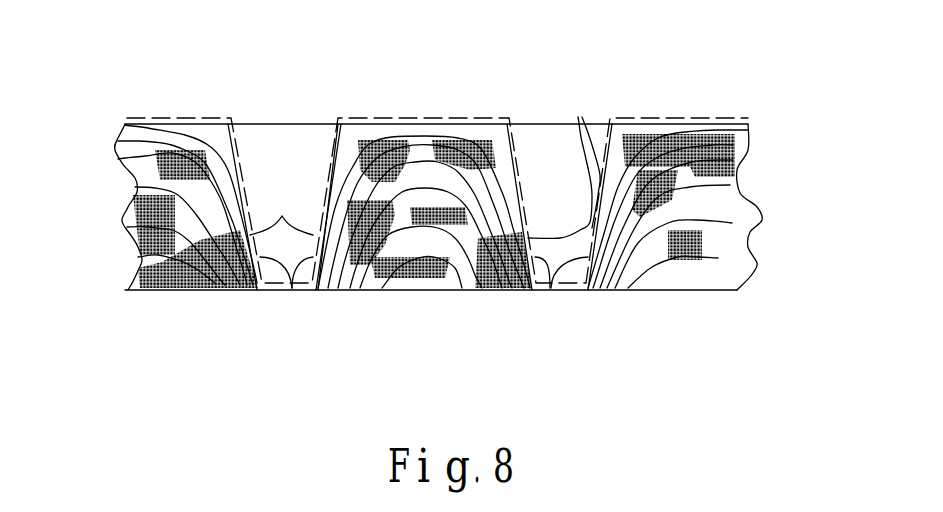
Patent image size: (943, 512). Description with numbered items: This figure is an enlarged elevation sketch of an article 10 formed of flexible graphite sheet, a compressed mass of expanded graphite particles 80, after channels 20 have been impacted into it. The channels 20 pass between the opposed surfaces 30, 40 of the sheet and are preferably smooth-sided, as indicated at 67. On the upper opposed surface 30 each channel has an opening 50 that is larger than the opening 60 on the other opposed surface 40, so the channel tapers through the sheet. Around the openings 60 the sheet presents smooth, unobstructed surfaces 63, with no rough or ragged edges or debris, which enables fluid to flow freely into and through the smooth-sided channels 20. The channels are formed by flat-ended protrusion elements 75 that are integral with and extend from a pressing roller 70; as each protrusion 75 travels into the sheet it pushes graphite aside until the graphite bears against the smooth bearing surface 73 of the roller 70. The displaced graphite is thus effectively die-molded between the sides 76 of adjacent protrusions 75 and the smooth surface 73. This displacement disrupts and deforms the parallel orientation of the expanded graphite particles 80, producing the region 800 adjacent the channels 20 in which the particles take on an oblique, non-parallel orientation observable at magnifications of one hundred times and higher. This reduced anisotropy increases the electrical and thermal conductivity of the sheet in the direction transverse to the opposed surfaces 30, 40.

The semiconductor structure 10 is at (158, 90).
The channels 20 is at (299, 112).
The opposed surface 30 is at (408, 125).
The opposed surface 40 is at (430, 292).
The openings 50 is at (325, 117).
The openings 60 is at (275, 293).
The smooth, unobstructed surfaces 63 is at (250, 293).
The smooth sides of channels 67 is at (425, 166).
The pressing roller 70 is at (248, 114).
The smooth bearing surface 73 is at (196, 118).
The protrusion elements 75 is at (269, 170).
The sides of protrusions 76 is at (293, 290).
The expanded graphite particles 80 is at (118, 141).
The region of disrupted orientation 800 is at (220, 163).